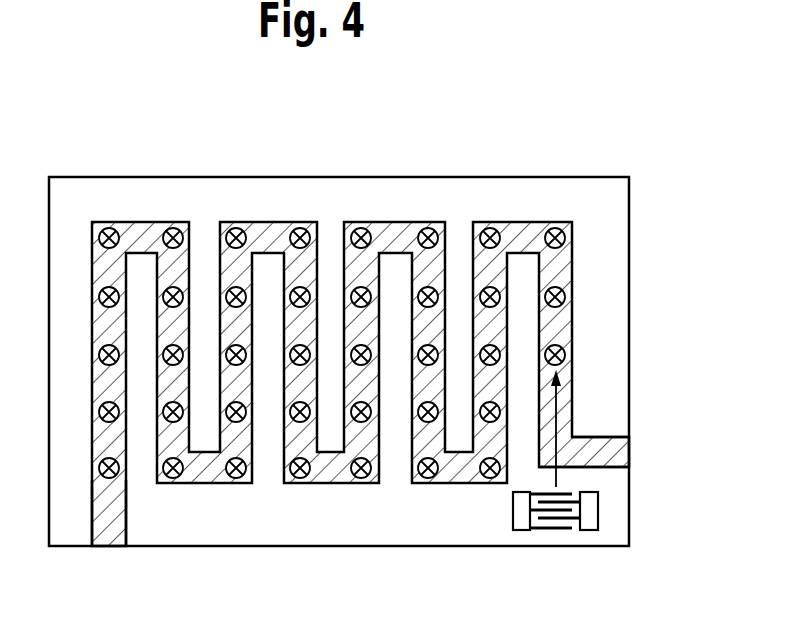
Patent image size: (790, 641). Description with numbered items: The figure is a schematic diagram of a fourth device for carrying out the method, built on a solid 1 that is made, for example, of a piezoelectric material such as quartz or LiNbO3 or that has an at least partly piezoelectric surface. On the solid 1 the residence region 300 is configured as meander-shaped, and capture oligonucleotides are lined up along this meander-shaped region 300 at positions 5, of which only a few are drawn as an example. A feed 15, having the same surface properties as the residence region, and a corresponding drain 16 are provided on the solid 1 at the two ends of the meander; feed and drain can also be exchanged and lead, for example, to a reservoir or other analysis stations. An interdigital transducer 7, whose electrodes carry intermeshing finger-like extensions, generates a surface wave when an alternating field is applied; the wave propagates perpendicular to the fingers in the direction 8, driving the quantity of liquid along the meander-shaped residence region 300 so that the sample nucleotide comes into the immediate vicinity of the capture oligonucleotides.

The solid 1 is at (607, 210).
The meander-shaped residence region 300 is at (172, 223).
The position 5 is at (360, 235).
The feed 15 is at (612, 441).
The drain 16 is at (102, 514).
The direction of propagation 8 is at (558, 473).
The interdigital transducer 7 is at (558, 533).